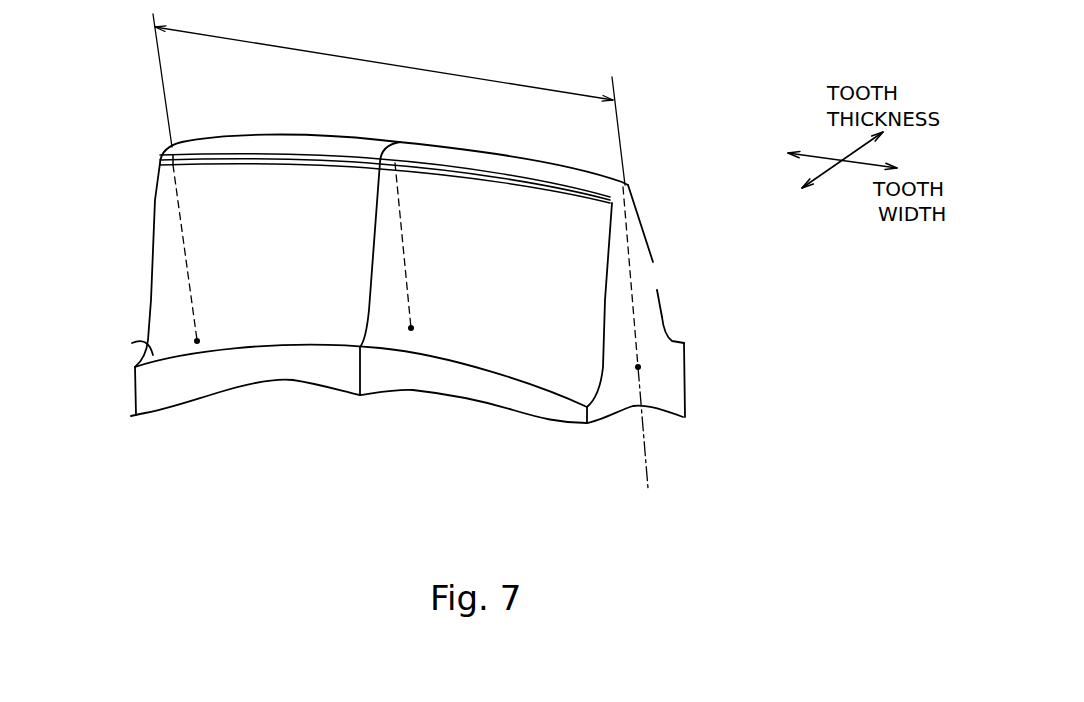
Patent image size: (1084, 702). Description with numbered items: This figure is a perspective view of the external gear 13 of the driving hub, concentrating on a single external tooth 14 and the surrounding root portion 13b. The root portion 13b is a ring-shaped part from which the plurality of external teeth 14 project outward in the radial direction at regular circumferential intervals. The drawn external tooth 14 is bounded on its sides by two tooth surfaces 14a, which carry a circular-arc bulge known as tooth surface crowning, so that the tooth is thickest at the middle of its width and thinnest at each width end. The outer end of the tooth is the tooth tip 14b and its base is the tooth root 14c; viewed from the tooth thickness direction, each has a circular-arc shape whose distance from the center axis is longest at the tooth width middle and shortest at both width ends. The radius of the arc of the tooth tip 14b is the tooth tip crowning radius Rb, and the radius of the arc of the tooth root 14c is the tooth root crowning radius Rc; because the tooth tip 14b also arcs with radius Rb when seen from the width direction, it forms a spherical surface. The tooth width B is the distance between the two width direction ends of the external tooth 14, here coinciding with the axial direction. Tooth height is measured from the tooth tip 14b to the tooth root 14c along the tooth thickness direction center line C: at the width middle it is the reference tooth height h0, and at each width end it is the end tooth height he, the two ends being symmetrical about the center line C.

The external gear 13 is at (722, 170).
The root portion 13b is at (680, 395).
The external tooth 14 is at (148, 243).
The tooth surface 14a is at (173, 280).
The tooth tip 14b is at (445, 152).
The tooth root 14c is at (132, 343).
The tooth width B is at (389, 99).
The tooth thickness direction center line C is at (647, 460).
The end tooth height he is at (418, 267).
The reference tooth height h0 is at (414, 247).
The tooth root crowning radius Rc is at (255, 347).
The tooth tip crowning radius Rb is at (508, 190).